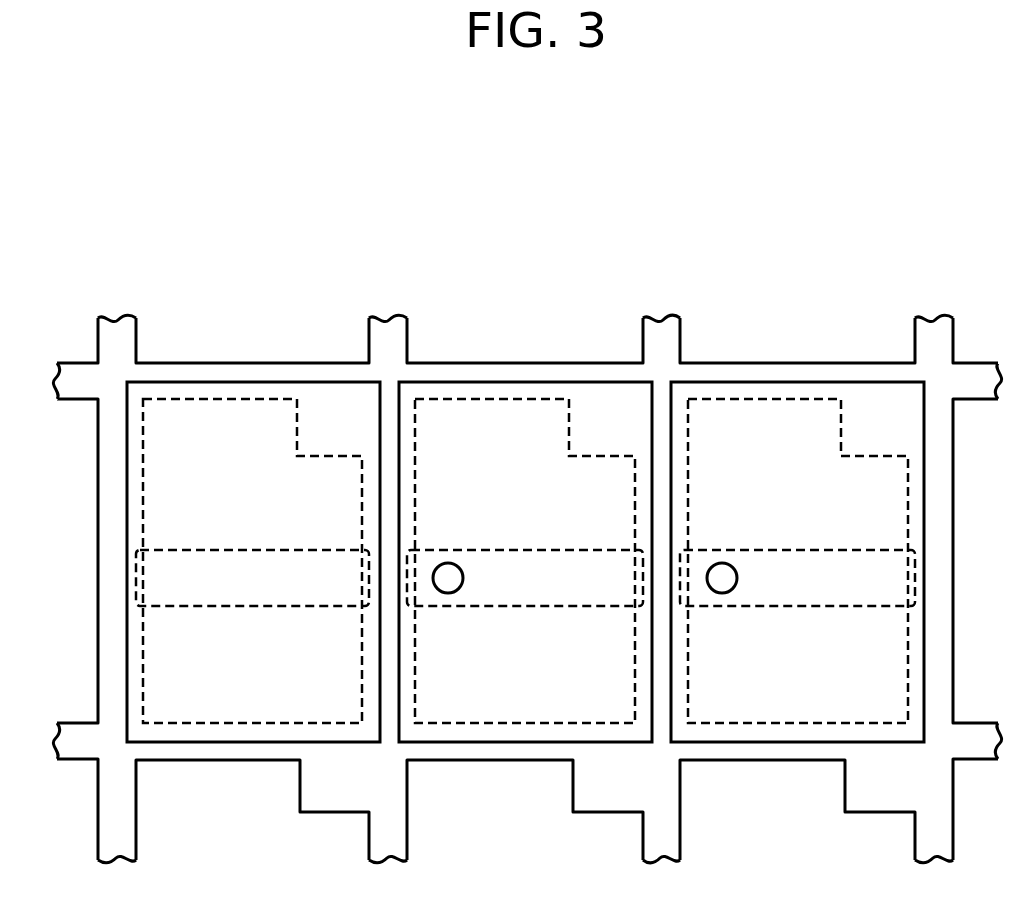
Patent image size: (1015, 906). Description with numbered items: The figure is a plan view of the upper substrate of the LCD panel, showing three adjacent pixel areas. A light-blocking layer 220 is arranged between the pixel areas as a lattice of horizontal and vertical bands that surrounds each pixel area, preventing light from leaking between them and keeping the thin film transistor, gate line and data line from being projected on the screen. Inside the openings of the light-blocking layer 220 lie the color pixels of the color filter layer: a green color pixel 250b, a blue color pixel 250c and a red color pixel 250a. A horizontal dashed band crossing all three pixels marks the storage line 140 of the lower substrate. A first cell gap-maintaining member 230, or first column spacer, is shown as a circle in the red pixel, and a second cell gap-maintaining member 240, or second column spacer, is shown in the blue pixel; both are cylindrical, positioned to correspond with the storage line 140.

The storage line 140 is at (135, 578).
The light-blocking layer 220 is at (579, 368).
The first cell gap-maintaining member 230 is at (722, 581).
The second cell gap-maintaining member 240 is at (448, 580).
The red color pixel 250a is at (757, 382).
The green color pixel 250b is at (200, 382).
The blue color pixel 250c is at (485, 382).